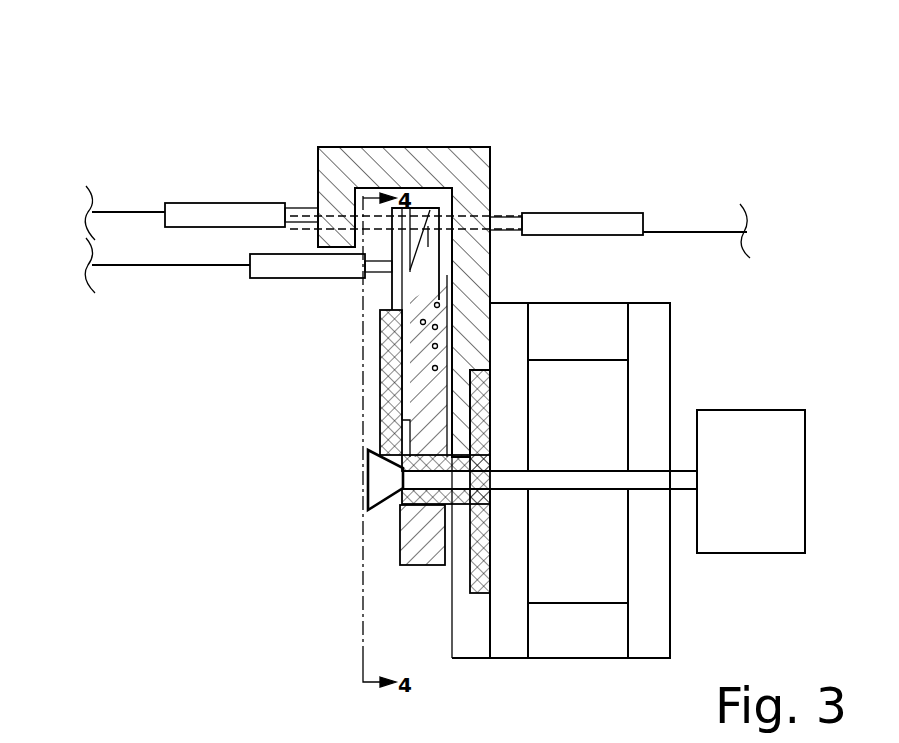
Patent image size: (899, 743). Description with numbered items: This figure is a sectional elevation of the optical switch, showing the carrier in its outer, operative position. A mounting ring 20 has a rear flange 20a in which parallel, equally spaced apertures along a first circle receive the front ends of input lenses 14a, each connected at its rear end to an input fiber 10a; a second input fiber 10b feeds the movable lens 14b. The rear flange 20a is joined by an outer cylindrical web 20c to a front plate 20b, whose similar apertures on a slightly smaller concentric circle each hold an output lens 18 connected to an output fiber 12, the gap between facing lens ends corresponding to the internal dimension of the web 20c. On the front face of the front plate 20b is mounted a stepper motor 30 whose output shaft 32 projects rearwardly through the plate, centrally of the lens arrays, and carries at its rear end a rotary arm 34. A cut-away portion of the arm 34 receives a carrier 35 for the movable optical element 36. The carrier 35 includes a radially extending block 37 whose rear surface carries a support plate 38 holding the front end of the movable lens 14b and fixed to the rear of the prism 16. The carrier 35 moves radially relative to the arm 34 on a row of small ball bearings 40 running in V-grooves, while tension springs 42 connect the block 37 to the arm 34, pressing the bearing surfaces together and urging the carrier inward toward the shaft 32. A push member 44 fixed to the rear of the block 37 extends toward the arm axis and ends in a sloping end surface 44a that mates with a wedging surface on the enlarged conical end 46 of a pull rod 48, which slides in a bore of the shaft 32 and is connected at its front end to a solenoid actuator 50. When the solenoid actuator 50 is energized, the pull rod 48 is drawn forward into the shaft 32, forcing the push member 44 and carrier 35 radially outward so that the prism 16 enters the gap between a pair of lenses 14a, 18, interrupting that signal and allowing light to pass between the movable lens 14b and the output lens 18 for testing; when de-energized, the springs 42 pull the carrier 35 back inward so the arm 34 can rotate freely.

The input fiber 10a is at (127, 208).
The second optical fiber 10b is at (130, 268).
The output fiber 12 is at (693, 223).
The input lens 14a is at (297, 208).
The movable lens 14b is at (383, 292).
The prism 16 is at (493, 148).
The output lens 18 is at (503, 217).
The mounting ring 20 is at (365, 143).
The rear flange 20a is at (319, 150).
The front plate 20b is at (492, 268).
The outer cylindrical web 20c is at (412, 147).
The stepper motor 30 is at (653, 345).
The output shaft 32 is at (400, 565).
The rotary arm 34 is at (402, 535).
The carrier 35 is at (405, 295).
The movable optical element 36 is at (424, 203).
The block 37 is at (385, 310).
The support plate 38 is at (395, 232).
The ball bearings 40 is at (415, 350).
The tension springs 42 is at (420, 335).
The push member 44 is at (388, 422).
The sloping end surface 44a is at (368, 474).
The enlarged conical end 46 is at (400, 465).
The pull rod 48 is at (640, 483).
The solenoid actuator 50 is at (755, 410).